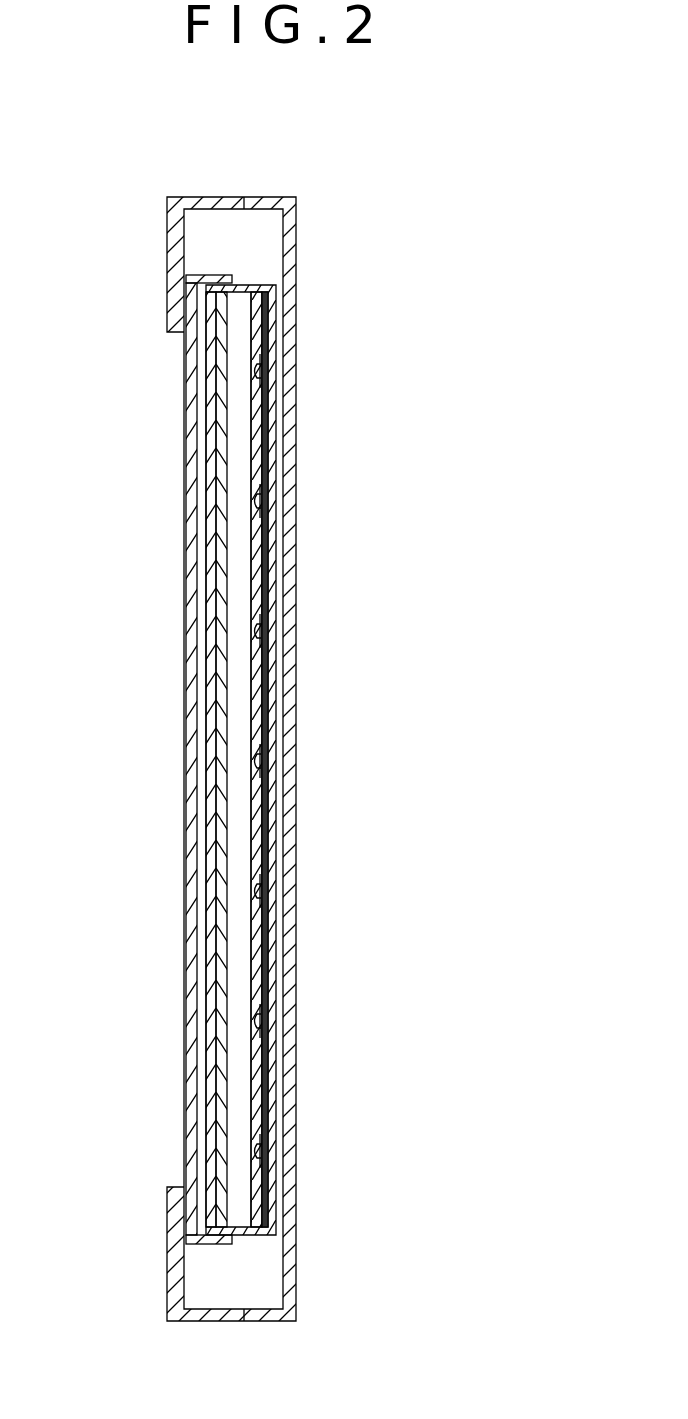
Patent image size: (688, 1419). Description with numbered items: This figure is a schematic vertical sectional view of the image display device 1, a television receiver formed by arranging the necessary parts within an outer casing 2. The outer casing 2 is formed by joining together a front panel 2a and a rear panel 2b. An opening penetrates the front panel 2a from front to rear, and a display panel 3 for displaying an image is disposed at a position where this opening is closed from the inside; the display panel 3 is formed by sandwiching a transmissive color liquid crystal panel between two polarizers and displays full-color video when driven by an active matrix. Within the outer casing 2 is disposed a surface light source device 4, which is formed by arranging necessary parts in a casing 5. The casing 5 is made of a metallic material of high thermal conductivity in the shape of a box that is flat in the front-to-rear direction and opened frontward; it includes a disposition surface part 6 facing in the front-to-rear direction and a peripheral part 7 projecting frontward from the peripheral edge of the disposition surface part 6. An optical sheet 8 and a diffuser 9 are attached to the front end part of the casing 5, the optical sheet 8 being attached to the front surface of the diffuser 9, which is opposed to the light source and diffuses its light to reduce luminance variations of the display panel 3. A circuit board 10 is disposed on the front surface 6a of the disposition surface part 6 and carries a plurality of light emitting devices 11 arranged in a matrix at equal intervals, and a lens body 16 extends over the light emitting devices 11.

The image display device 1 is at (418, 182).
The outer casing 2 is at (203, 705).
The front panel 2a is at (211, 197).
The rear panel 2b is at (269, 197).
The display panel 3 is at (186, 626).
The surface light source device 4 is at (233, 689).
The casing 5 is at (273, 327).
The disposition surface part 6 is at (228, 759).
The front surface 6a is at (268, 430).
The peripheral part 7 is at (243, 280).
The optical sheet 8 is at (207, 683).
The diffuser 9 is at (220, 754).
The circuit board 10 is at (270, 680).
The light emitting devices 11 is at (255, 371).
The lens body 16 is at (257, 830).